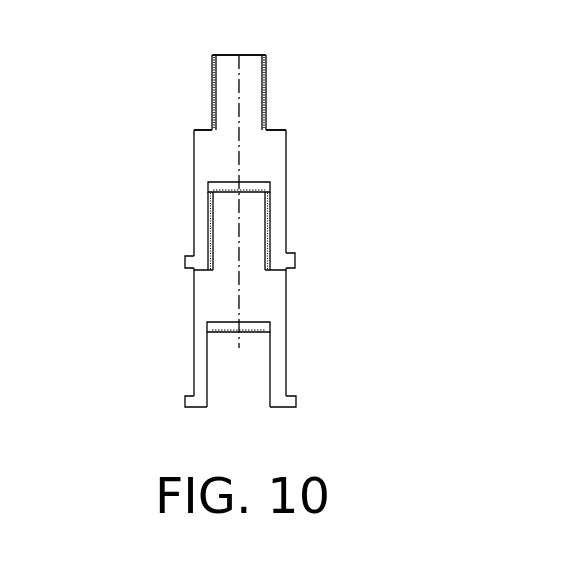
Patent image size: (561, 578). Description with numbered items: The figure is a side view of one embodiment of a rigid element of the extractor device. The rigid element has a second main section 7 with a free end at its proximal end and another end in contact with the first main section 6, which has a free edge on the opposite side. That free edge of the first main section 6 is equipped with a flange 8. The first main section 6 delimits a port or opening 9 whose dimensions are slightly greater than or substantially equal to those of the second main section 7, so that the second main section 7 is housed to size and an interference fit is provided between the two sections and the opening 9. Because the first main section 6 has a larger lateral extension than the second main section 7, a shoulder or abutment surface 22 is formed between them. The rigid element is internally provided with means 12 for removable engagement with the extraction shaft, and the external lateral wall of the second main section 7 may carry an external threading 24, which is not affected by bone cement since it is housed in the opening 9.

The first main section 6 is at (288, 170).
The second main section 7 is at (279, 86).
The means for removable engagement 12 is at (207, 84).
The shoulder or abutment surface 22 is at (280, 127).
The external threading 24 is at (213, 112).
The flange 8 is at (295, 262).
The port or opening 9 is at (235, 375).